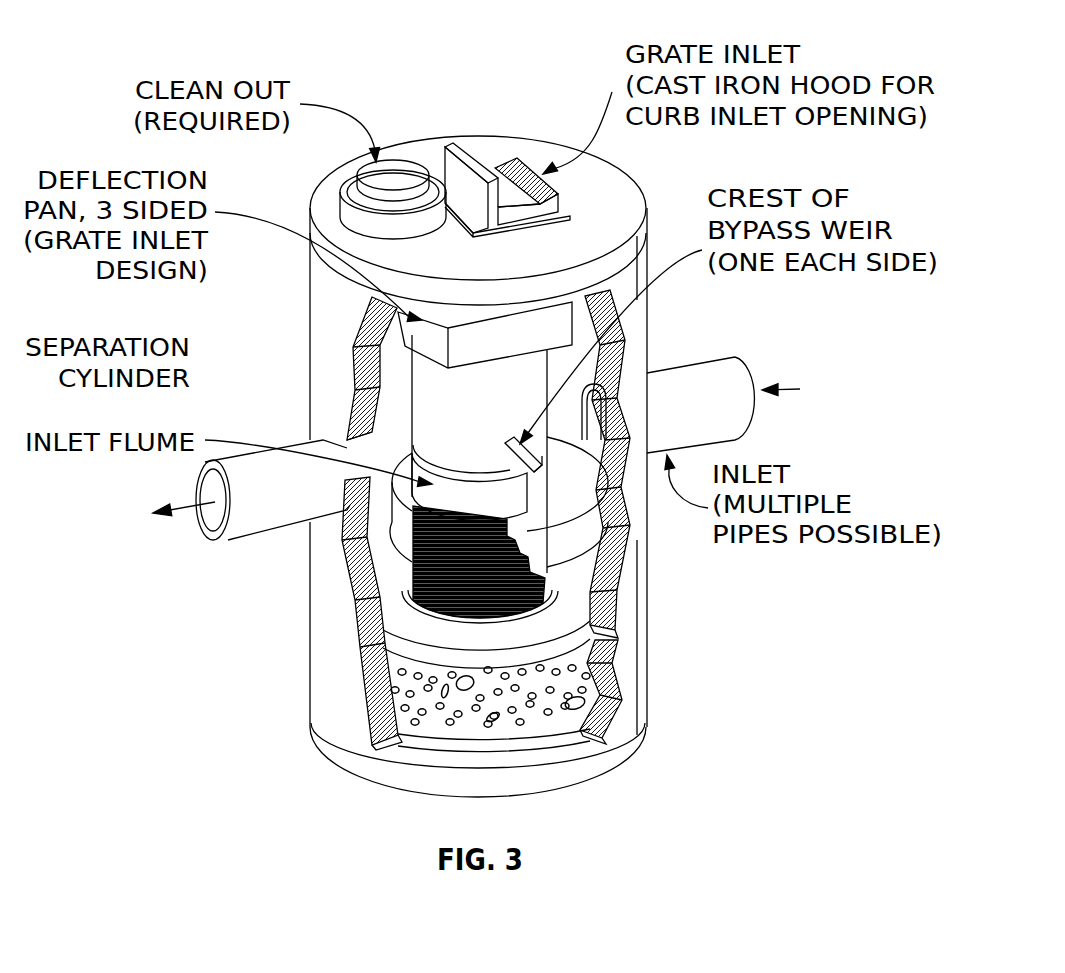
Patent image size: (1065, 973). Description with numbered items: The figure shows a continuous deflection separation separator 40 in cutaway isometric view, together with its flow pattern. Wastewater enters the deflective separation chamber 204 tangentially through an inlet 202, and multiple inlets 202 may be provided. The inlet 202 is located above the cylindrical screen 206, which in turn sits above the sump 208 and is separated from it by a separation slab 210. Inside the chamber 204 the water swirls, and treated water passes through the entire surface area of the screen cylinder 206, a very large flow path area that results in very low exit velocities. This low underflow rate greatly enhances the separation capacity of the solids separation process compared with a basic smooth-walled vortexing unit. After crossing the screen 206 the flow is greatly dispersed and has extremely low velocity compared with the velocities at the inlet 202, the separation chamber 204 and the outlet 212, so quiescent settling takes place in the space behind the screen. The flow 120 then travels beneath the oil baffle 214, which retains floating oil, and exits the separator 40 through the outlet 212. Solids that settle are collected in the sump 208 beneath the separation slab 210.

The separator 40 is at (257, 38).
The deflective separation chamber 204 is at (420, 421).
The inlet 202 is at (680, 381).
The flow 120 is at (868, 393).
The outlet 212 is at (242, 546).
The cylindrical screen 206 is at (430, 575).
The separation slab 210 is at (400, 629).
The oil baffle 214 is at (598, 536).
The sump 208 is at (576, 690).